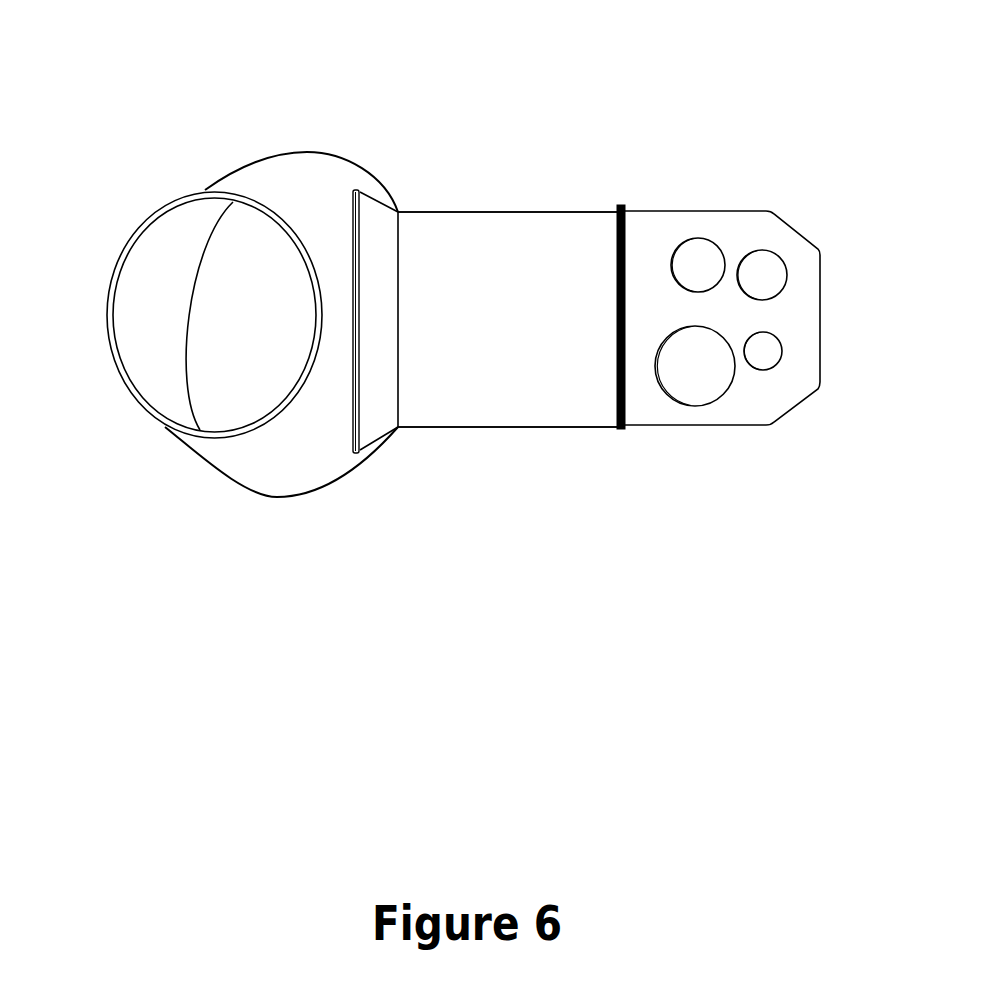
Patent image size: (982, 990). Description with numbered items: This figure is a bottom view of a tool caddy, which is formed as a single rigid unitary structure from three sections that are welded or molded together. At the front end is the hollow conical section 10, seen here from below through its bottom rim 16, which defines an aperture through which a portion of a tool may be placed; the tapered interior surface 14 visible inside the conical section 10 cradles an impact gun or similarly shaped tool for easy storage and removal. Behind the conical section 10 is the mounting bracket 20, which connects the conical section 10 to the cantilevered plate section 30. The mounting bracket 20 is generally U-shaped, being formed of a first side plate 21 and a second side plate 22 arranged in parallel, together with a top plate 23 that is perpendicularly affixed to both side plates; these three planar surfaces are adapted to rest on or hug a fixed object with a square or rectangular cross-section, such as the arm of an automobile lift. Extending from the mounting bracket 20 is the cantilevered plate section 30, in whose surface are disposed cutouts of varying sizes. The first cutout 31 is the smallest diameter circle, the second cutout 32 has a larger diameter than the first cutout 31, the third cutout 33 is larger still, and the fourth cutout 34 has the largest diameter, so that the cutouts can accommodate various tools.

The conical section 10 is at (285, 452).
The tapered interior surface 14 is at (165, 317).
The bottom rim 16 is at (133, 240).
The mounting bracket 20 is at (492, 198).
The first side plate 21 is at (375, 375).
The second side plate 22 is at (619, 430).
The top plate 23 is at (480, 362).
The cantilevered plate section 30 is at (645, 228).
The first cutout 31 is at (751, 368).
The second cutout 32 is at (765, 255).
The third cutout 33 is at (697, 235).
The fourth cutout 34 is at (660, 393).